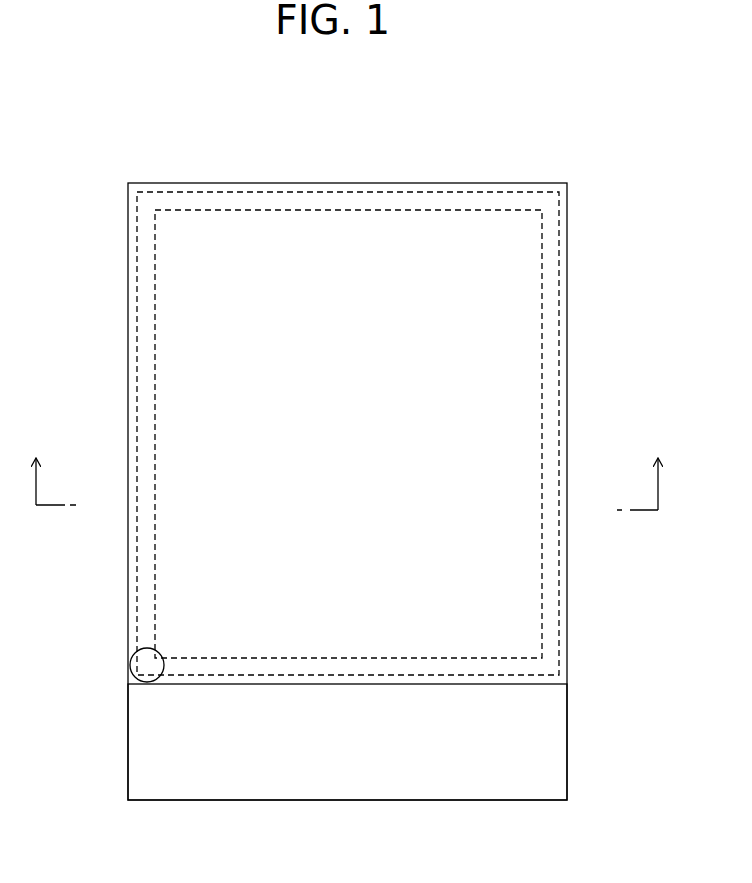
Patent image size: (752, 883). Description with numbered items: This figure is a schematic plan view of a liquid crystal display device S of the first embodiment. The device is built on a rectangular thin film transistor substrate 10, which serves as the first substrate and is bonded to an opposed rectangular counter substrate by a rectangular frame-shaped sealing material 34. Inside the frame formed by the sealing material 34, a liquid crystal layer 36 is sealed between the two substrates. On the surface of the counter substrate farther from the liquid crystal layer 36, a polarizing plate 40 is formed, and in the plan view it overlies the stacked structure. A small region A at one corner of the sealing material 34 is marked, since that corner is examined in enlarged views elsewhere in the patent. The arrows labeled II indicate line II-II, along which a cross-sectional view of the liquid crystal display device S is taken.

The thin film transistor (TFT) substrate 10 is at (142, 768).
The sealing material 34 is at (147, 333).
The liquid crystal layer 36 is at (518, 277).
The polarizing plate 40 is at (233, 232).
The liquid crystal display device S is at (140, 100).
The region A is at (138, 647).
The line II- II is at (344, 484).